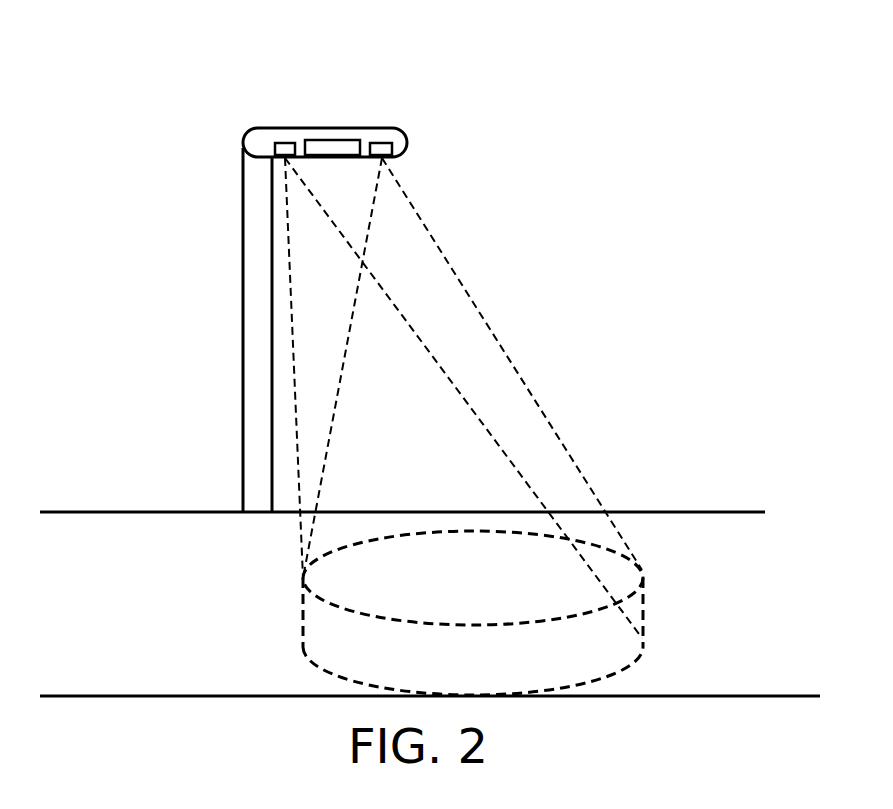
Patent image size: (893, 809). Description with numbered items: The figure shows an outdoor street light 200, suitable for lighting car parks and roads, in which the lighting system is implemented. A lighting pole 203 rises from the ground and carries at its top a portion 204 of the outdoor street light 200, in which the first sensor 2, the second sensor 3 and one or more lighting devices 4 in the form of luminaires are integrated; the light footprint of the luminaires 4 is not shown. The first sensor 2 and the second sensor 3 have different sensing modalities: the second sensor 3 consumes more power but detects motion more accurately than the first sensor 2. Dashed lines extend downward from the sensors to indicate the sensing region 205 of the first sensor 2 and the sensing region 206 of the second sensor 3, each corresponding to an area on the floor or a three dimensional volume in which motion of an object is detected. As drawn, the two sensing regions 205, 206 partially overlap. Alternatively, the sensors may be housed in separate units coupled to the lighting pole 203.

The outdoor street light 200 is at (131, 128).
The first sensor 2 is at (384, 143).
The second sensor 3 is at (290, 143).
The lighting device 4 is at (334, 140).
The lighting pole 203 is at (243, 340).
The portion of the outdoor street light 204 is at (407, 145).
The sensing region of the first sensor 205 is at (497, 340).
The sensing region of the second sensor 206 is at (303, 605).